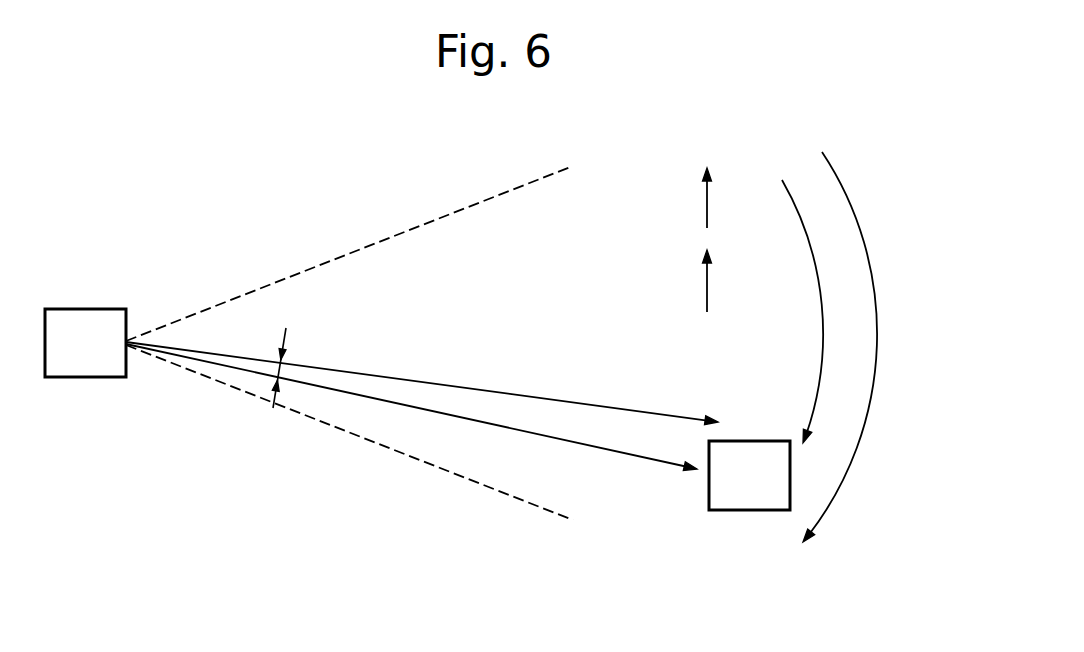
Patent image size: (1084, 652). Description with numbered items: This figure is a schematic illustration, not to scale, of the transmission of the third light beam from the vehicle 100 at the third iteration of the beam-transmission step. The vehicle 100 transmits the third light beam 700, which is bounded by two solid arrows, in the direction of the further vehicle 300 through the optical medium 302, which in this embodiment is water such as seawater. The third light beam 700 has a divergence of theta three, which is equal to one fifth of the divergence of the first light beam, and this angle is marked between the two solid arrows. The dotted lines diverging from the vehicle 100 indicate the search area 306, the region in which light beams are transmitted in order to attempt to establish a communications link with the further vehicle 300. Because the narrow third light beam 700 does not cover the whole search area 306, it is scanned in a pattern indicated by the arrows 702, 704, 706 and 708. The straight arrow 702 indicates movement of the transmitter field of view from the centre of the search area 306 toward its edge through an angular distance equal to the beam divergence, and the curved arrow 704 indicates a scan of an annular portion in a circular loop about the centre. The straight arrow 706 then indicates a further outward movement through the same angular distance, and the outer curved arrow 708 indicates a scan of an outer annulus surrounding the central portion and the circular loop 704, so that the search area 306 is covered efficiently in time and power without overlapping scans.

The vehicle 100 is at (88, 322).
The further vehicle 300 is at (752, 462).
The optical medium 302 is at (373, 169).
The search area 306 is at (498, 195).
The third light beam 700 is at (437, 384).
The straight arrow movement toward edge 702 is at (705, 284).
The circular loop scan 704 is at (822, 310).
The second straight arrow movement toward edge 706 is at (705, 206).
The outer circular loop scan 708 is at (862, 233).